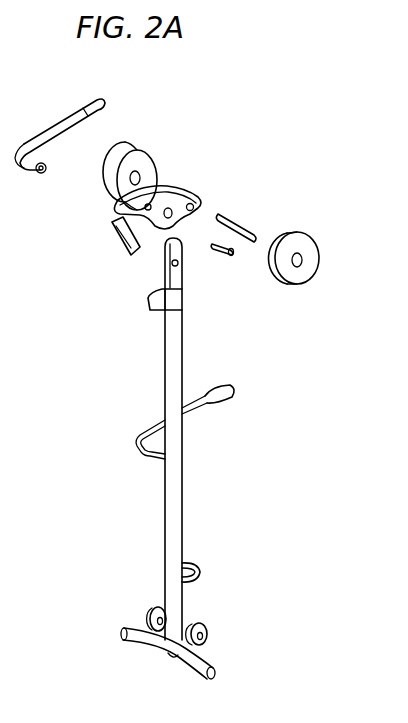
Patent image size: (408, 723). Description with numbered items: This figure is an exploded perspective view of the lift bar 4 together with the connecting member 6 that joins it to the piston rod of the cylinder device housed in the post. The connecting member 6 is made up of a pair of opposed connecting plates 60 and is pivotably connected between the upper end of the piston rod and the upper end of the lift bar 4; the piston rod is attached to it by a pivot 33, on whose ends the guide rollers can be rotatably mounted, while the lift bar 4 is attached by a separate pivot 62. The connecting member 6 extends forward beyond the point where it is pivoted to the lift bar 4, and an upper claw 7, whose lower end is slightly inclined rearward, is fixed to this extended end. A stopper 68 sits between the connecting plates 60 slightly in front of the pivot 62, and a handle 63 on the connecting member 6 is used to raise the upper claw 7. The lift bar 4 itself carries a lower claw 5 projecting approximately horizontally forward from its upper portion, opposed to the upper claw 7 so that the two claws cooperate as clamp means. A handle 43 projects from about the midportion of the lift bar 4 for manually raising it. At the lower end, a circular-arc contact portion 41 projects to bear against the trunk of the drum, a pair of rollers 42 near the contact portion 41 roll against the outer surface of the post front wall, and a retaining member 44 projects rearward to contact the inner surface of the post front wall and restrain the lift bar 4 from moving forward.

The lift bar 4 is at (182, 496).
The lower claw 5 is at (150, 306).
The connecting member 6 is at (185, 198).
The upper claw 7 is at (125, 250).
The pivot 33 is at (236, 218).
The circular-arc contact portion 41 is at (150, 648).
The rollers 42 is at (152, 608).
The handle 43 is at (142, 447).
The retaining member 44 is at (200, 572).
The connecting plates 60 is at (165, 188).
The pivot 62 is at (218, 258).
The handle 63 is at (48, 130).
The stopper 68 is at (112, 208).